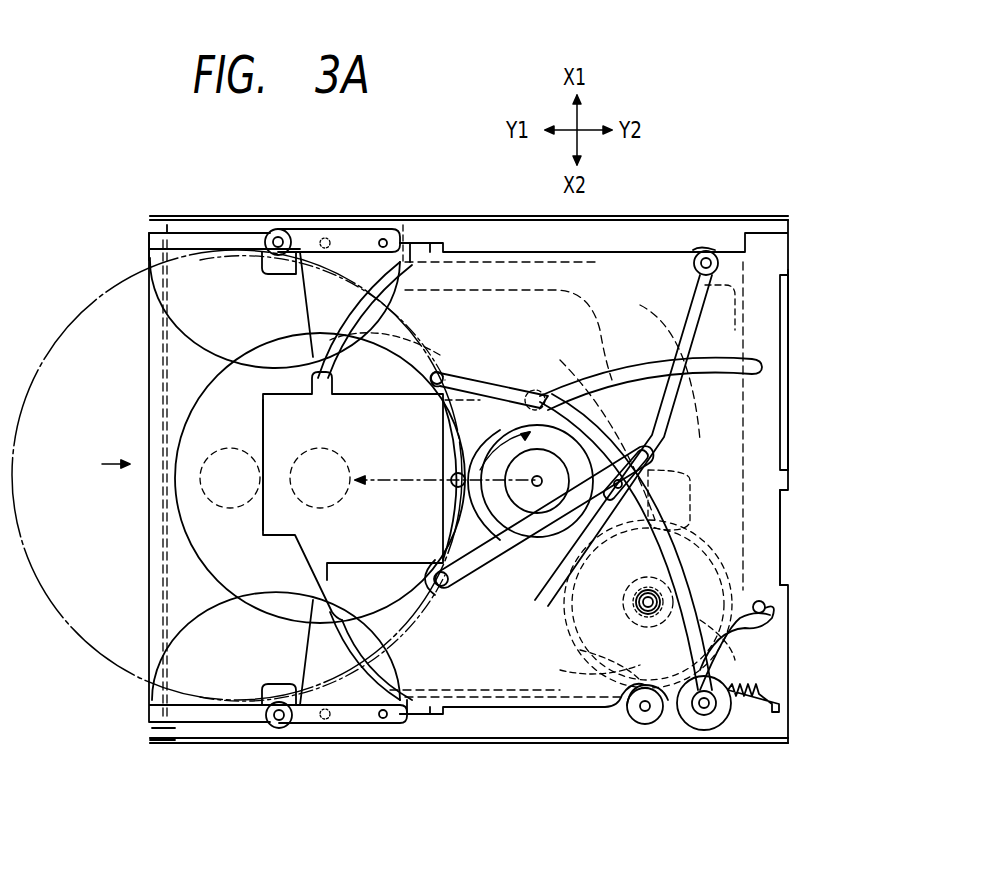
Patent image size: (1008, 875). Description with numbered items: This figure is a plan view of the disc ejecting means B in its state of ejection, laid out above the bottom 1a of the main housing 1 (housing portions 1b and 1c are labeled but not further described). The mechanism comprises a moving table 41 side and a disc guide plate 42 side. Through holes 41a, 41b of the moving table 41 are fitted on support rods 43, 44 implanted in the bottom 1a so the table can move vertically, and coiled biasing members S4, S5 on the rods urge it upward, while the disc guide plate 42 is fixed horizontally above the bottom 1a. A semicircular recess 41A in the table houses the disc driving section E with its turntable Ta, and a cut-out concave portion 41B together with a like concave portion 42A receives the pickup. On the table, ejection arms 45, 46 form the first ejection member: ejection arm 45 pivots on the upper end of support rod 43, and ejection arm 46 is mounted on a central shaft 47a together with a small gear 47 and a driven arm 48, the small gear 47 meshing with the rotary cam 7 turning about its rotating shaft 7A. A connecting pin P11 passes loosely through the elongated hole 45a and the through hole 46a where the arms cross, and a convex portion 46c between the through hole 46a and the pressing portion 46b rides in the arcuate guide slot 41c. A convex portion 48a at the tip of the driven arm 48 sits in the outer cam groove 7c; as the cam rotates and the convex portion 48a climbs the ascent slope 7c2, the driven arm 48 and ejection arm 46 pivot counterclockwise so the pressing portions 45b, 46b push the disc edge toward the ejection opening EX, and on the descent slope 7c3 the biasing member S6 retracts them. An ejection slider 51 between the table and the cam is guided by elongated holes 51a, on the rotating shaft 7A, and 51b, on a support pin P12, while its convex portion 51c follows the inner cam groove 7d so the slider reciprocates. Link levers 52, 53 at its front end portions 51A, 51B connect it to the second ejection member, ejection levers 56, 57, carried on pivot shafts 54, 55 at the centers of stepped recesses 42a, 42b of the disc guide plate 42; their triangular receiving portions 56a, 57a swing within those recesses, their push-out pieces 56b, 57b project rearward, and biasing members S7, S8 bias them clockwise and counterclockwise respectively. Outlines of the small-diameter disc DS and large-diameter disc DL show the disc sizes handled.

The main housing 1 is at (450, 194).
The bottom 1a is at (156, 736).
The rail edge 1b is at (162, 746).
The side wall 1c is at (162, 223).
The rotary cam 7 is at (755, 528).
The rotating shaft 7A is at (646, 594).
The cam groove 7c is at (687, 518).
The ascent slope 7c2 is at (618, 679).
The descent slope 7c3 is at (728, 643).
The cam groove 7d is at (636, 598).
The moving table 41 is at (775, 328).
The recess 41A is at (462, 475).
The cut-out concave portion 41B is at (402, 559).
The through hole 41a is at (700, 258).
The through hole 41b is at (777, 606).
The guide slot 41c is at (594, 395).
The disc guide plate 42 is at (148, 543).
The concave portion 42A is at (272, 447).
The stepped recess 42a is at (256, 601).
The stepped recess 42b is at (163, 340).
The support rod 43 is at (708, 255).
The support rod 44 is at (770, 621).
The ejection arm 45 is at (512, 585).
The elongated hole 45a is at (651, 461).
The pressing portion 45b is at (442, 590).
The ejection arm 46 is at (485, 393).
The through hole 46a is at (547, 553).
The pressing portion 46b is at (438, 373).
The convex portion 46c is at (534, 401).
The small gear 47 is at (715, 732).
The central shaft 47a is at (702, 722).
The driven arm 48 is at (652, 722).
The convex portion 48a is at (612, 660).
The ejection slider 51 is at (495, 263).
The front end portion 51A is at (432, 724).
The front end portion 51B is at (413, 228).
The elongated hole 51a is at (642, 613).
The elongated hole 51b is at (758, 394).
The convex portion 51c is at (768, 546).
The link lever 52 is at (383, 727).
The link lever 53 is at (358, 240).
The pivot shaft 54 is at (280, 732).
The pivot shaft 55 is at (276, 230).
The ejection lever 56 is at (303, 650).
The receiving portion 56a is at (383, 664).
The push-out piece 56b is at (334, 724).
The ejection lever 57 is at (293, 307).
The receiving portion 57a is at (425, 275).
The push-out piece 57b is at (320, 233).
The disc ejecting means B is at (510, 748).
The large-diameter disc DL is at (130, 678).
The small-diameter disc DS is at (162, 583).
The disc driving section E is at (432, 431).
The ejection opening EX is at (98, 464).
The connecting pin P11 is at (608, 481).
The support pin P12 is at (645, 386).
The biasing member S4 is at (712, 253).
The biasing member S5 is at (767, 630).
The biasing member S6 is at (762, 698).
The biasing member S7 is at (270, 730).
The biasing member S8 is at (257, 224).
The turntable Ta is at (522, 523).